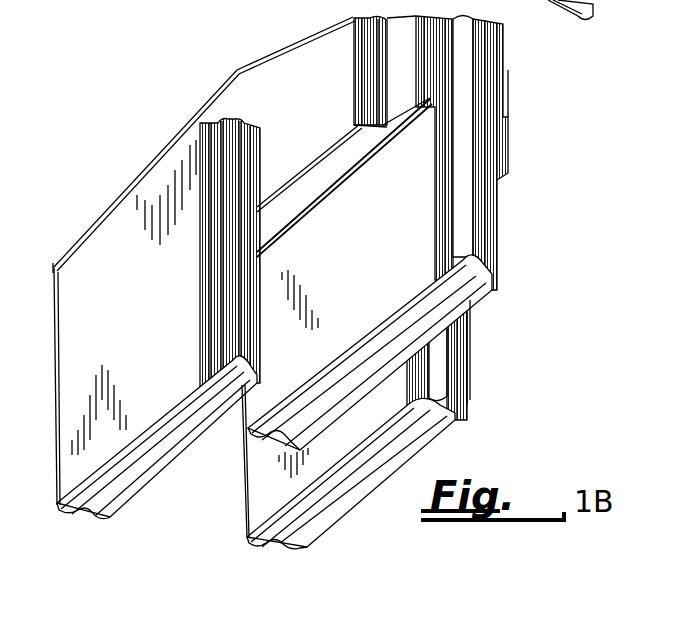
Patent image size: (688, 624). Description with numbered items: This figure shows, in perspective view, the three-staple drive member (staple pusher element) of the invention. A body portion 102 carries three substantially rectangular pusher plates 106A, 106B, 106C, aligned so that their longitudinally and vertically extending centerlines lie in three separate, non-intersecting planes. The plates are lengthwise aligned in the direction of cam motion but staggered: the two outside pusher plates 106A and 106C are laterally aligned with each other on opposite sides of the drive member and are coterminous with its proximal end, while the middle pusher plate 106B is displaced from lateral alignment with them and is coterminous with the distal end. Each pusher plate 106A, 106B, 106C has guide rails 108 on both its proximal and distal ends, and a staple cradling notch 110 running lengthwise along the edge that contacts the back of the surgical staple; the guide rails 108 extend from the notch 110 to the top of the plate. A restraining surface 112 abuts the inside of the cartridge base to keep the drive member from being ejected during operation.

The body portion 102 is at (311, 105).
The pusher plate 106A is at (162, 321).
The middle pusher plate 106B is at (387, 272).
The pusher plate 106C is at (466, 385).
The guide rail 108 is at (232, 120).
The staple cradling notch 110 is at (300, 537).
The restraining surface 112 is at (342, 175).